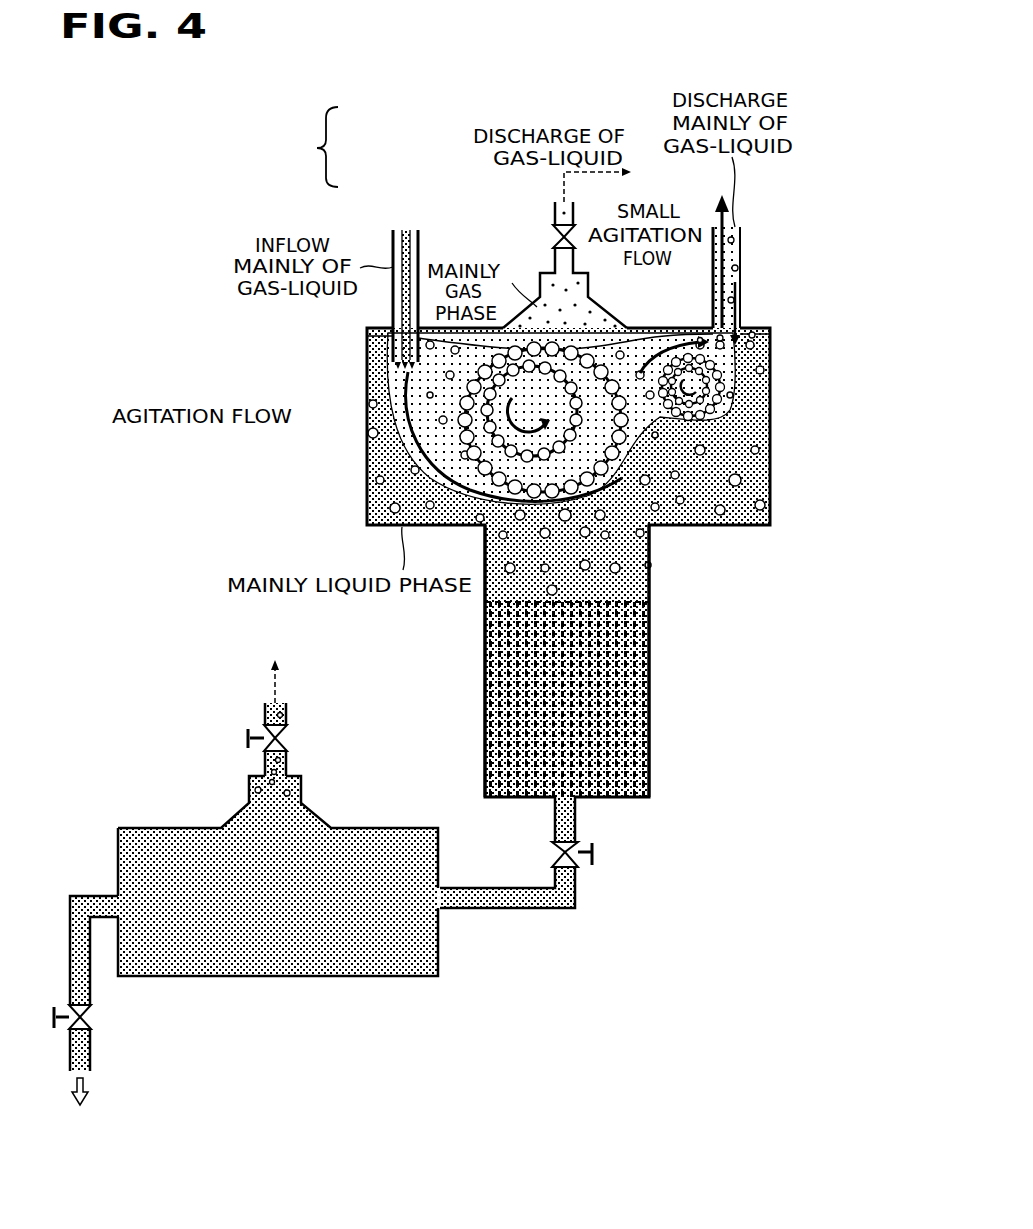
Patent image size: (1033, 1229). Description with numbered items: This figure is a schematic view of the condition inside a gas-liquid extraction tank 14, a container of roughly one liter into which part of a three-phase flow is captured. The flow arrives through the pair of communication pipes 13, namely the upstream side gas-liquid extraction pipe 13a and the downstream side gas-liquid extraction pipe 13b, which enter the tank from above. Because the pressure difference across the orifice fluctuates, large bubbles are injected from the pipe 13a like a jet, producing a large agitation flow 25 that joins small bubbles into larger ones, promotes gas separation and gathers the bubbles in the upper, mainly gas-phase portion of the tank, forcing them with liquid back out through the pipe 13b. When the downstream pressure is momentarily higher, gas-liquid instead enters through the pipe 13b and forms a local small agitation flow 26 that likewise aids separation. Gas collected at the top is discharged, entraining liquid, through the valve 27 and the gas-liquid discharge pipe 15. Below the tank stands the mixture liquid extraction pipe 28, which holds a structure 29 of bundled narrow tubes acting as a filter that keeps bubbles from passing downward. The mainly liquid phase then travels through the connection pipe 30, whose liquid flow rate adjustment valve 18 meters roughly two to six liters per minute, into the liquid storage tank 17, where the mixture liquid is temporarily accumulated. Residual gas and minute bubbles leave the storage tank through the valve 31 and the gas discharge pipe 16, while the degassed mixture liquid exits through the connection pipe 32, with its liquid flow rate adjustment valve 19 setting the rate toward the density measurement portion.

The communication pipes 13 is at (533, 238).
The upstream side gas-liquid extraction pipe 13a is at (420, 232).
The downstream side gas-liquid extraction pipe 13b is at (740, 260).
The gas-liquid extraction tank 14 is at (733, 527).
The gas-liquid discharge pipe 15 is at (555, 207).
The gas discharge pipe 16 is at (286, 711).
The liquid storage tank 17 is at (357, 976).
The liquid flow rate adjustment valve 18 is at (593, 852).
The liquid flow rate adjustment valve 19 is at (47, 1006).
The agitation flow 25 is at (388, 417).
The small agitation flow 26 is at (668, 348).
The valve 27 is at (555, 247).
The mixture liquid extraction pipe 28 is at (487, 702).
The structure 29 is at (631, 663).
The connection pipe 30 is at (520, 908).
The valve 31 is at (246, 737).
The connection pipe 32 is at (91, 1053).